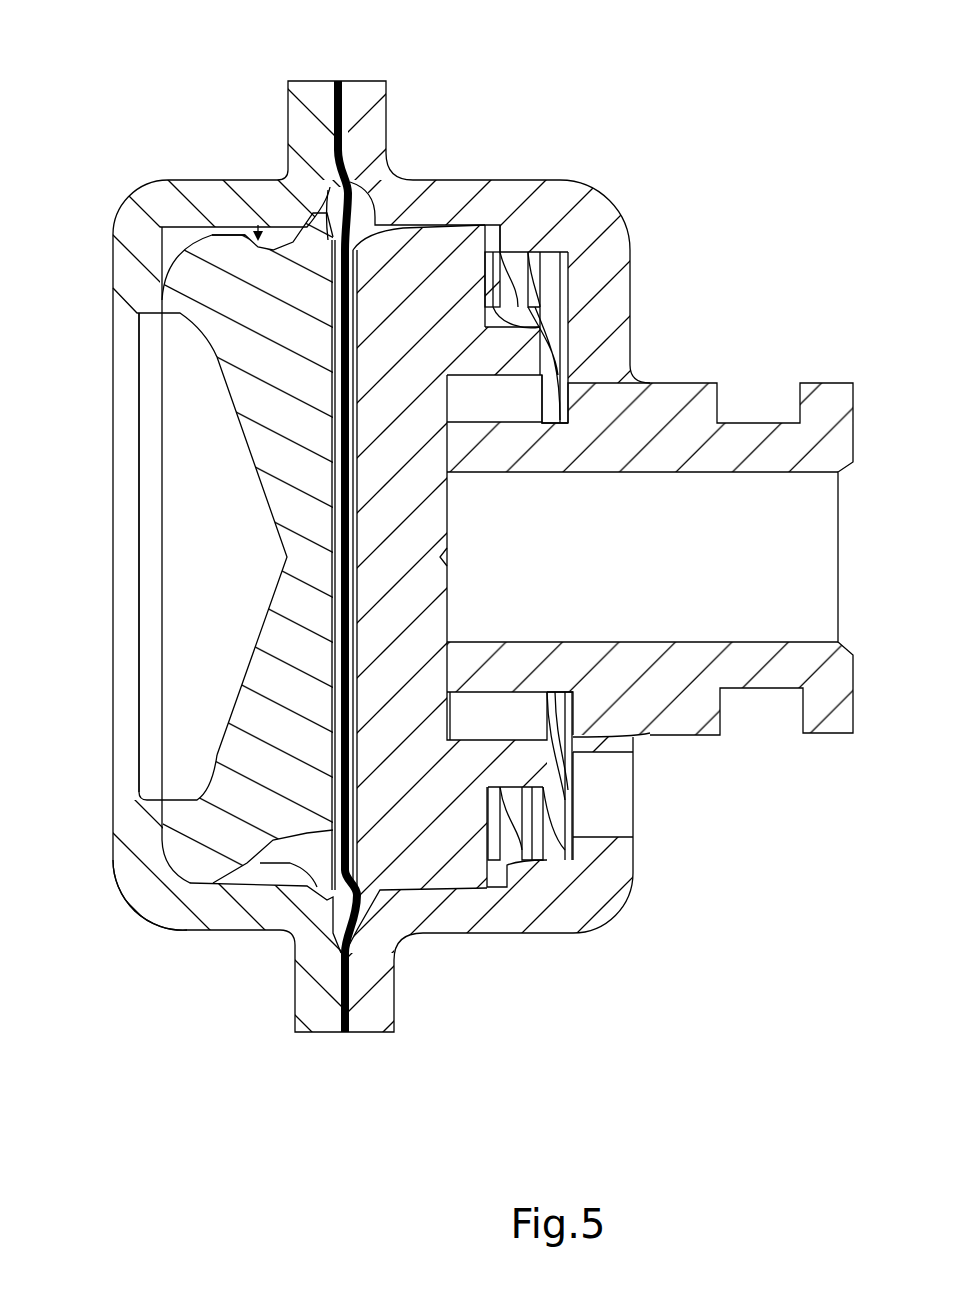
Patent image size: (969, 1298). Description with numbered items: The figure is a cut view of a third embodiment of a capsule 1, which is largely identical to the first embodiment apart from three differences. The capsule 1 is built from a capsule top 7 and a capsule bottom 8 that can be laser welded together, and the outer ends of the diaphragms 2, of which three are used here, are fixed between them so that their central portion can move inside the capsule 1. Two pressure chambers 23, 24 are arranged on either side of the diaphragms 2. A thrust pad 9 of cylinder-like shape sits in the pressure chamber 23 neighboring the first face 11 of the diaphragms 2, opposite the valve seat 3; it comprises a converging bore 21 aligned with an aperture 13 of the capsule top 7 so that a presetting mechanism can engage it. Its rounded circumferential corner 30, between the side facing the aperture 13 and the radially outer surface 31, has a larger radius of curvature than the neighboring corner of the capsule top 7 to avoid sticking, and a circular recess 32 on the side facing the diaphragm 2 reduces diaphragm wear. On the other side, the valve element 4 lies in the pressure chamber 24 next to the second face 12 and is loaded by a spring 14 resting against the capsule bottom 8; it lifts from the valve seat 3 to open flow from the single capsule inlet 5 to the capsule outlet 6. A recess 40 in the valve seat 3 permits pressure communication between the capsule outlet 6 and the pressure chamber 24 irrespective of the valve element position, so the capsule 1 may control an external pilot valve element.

The capsule 1 is at (158, 60).
The diaphragm 2 is at (342, 1037).
The valve seat 3 is at (450, 432).
The valve element 4 is at (422, 258).
The capsule inlet 5 is at (610, 797).
The capsule outlet 6 is at (763, 640).
The capsule top 7 is at (153, 203).
The capsule bottom 8 is at (587, 250).
The thrust pad 9 is at (220, 250).
The first face 11 is at (300, 838).
The second face 12 is at (213, 883).
The aperture 13 is at (150, 780).
The spring 14 is at (527, 260).
The converging bore 21 is at (217, 738).
The pressure chamber 23 is at (276, 247).
The pressure chamber 24 is at (490, 232).
The rounded circumferential corner 30 is at (183, 867).
The radially outer surface 31 is at (262, 220).
The circular recess 32 is at (328, 190).
The recess 40 is at (458, 662).